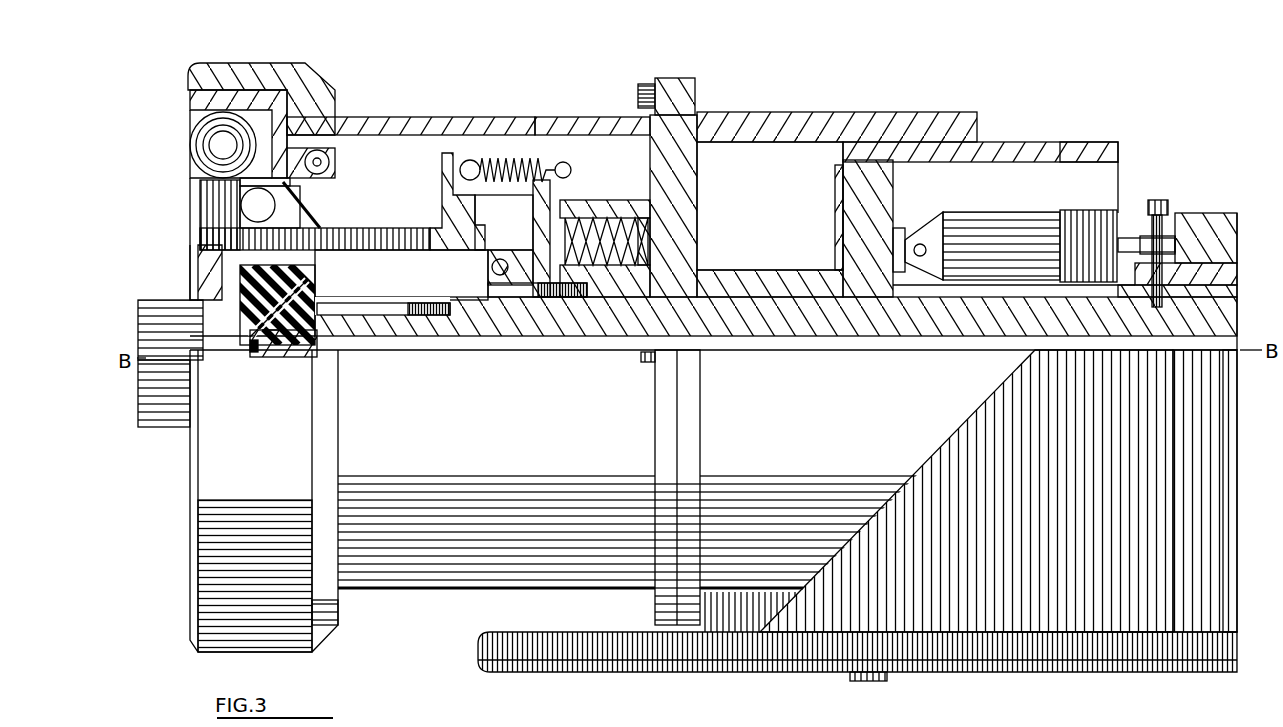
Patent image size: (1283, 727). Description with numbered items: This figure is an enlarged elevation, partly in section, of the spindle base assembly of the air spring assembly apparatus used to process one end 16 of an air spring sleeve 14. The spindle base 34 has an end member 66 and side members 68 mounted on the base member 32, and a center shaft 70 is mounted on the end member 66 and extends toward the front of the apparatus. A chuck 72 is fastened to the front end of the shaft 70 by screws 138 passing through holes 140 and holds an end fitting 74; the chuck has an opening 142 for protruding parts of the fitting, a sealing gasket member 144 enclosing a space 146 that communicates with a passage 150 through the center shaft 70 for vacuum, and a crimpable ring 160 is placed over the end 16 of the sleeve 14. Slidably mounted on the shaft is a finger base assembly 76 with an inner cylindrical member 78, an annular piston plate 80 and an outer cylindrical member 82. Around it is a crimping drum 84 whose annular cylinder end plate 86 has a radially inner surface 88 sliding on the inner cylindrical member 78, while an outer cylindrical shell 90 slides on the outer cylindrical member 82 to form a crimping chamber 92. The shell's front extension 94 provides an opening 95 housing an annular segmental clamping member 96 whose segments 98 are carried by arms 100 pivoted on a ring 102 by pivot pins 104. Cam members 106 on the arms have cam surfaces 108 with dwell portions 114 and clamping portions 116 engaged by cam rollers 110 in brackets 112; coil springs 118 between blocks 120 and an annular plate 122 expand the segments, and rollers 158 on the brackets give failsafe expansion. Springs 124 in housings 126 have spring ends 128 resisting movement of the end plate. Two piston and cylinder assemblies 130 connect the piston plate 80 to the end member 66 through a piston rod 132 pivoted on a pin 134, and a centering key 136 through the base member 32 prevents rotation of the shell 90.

The air spring sleeve 14 is at (152, 297).
The end of the sleeve 16 is at (203, 290).
The base member 32 is at (607, 650).
The spindle base 34 is at (1238, 450).
The end member 66 is at (1223, 380).
The side members 68 is at (1065, 610).
The center shaft 70 is at (1228, 305).
The chuck 72 is at (383, 302).
The end fitting 74 is at (240, 345).
The finger base assembly 76 is at (1030, 145).
The inner cylindrical member 78 is at (568, 325).
The annular piston plate 80 is at (880, 183).
The outer cylindrical member 82 is at (1082, 148).
The crimping drum 84 is at (567, 123).
The annular cylinder end plate 86 is at (702, 170).
The cylindrical radially inner surface 88 is at (635, 357).
The outer cylindrical shell 90 is at (770, 122).
The crimping chamber 92 is at (802, 160).
The front extension 94 is at (382, 120).
The opening 95 is at (413, 148).
The annular segmental clamping member 96 is at (205, 250).
The segments 98 is at (215, 217).
The arms 100 is at (407, 233).
The ring 102 is at (518, 245).
The pivot pins 104 is at (492, 270).
The cam members 106 is at (205, 185).
The cam surfaces 108 is at (287, 181).
The cam rollers 110 is at (212, 125).
The brackets 112 is at (307, 100).
The dwell portions 114 is at (310, 208).
The clamping portions 116 is at (292, 122).
The coil springs 118 is at (507, 157).
The blocks 120 is at (455, 160).
The annular plate 122 is at (547, 203).
The springs 124 is at (637, 205).
The housings 126 is at (612, 320).
The spring ends 128 is at (655, 237).
The piston and cylinder assemblies 130 is at (1010, 233).
The piston rod 132 is at (1140, 233).
The pin 134 is at (1178, 213).
The centering key 136 is at (885, 685).
The screws 138 is at (417, 303).
The holes 140 is at (360, 330).
The opening 142 is at (322, 352).
The sealing gasket member 144 is at (255, 352).
The space 146 is at (265, 337).
The passage 150 is at (1015, 340).
The rollers 158 is at (332, 163).
The ring 160 is at (265, 285).